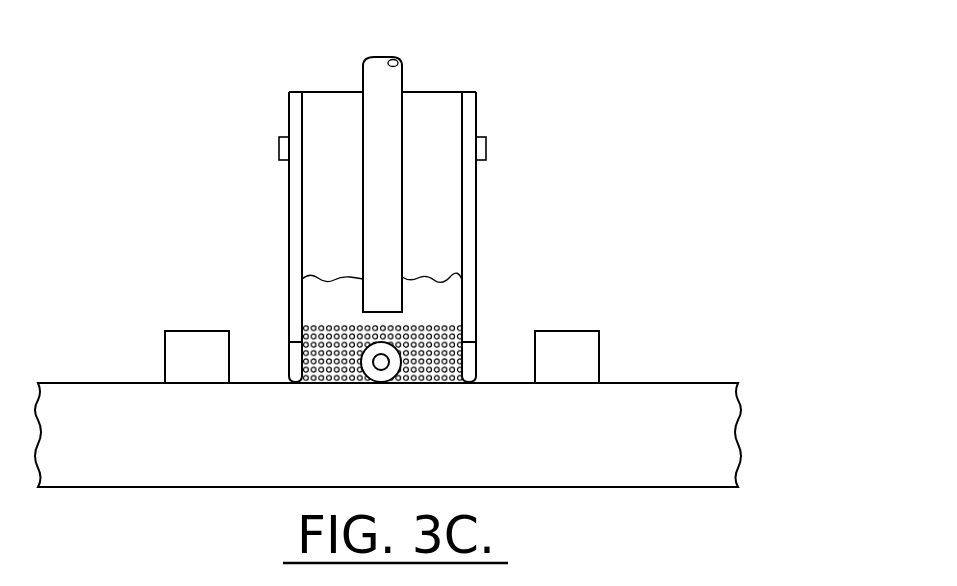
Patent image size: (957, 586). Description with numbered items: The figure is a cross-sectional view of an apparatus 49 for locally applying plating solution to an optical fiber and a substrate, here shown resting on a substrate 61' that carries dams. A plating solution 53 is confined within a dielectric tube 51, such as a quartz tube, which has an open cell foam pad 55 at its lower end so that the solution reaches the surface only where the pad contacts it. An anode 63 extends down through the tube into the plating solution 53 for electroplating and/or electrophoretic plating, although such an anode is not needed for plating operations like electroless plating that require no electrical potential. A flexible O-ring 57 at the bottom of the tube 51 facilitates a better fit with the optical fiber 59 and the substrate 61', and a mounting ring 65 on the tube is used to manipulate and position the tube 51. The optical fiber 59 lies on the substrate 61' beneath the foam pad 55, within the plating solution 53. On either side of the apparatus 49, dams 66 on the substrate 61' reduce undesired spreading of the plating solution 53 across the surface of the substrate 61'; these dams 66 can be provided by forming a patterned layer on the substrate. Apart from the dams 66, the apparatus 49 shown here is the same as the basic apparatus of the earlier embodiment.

The apparatus 49 is at (562, 219).
The dielectric tube 51 is at (295, 178).
The plating solution 53 is at (438, 305).
The open cell foam pad 55 is at (437, 378).
The flexible O-ring 57 is at (290, 355).
The optical fiber 59 is at (388, 378).
The substrate 61' is at (426, 435).
The anode 63 is at (403, 73).
The mounting ring 65 is at (279, 147).
The dam 66 is at (165, 353).